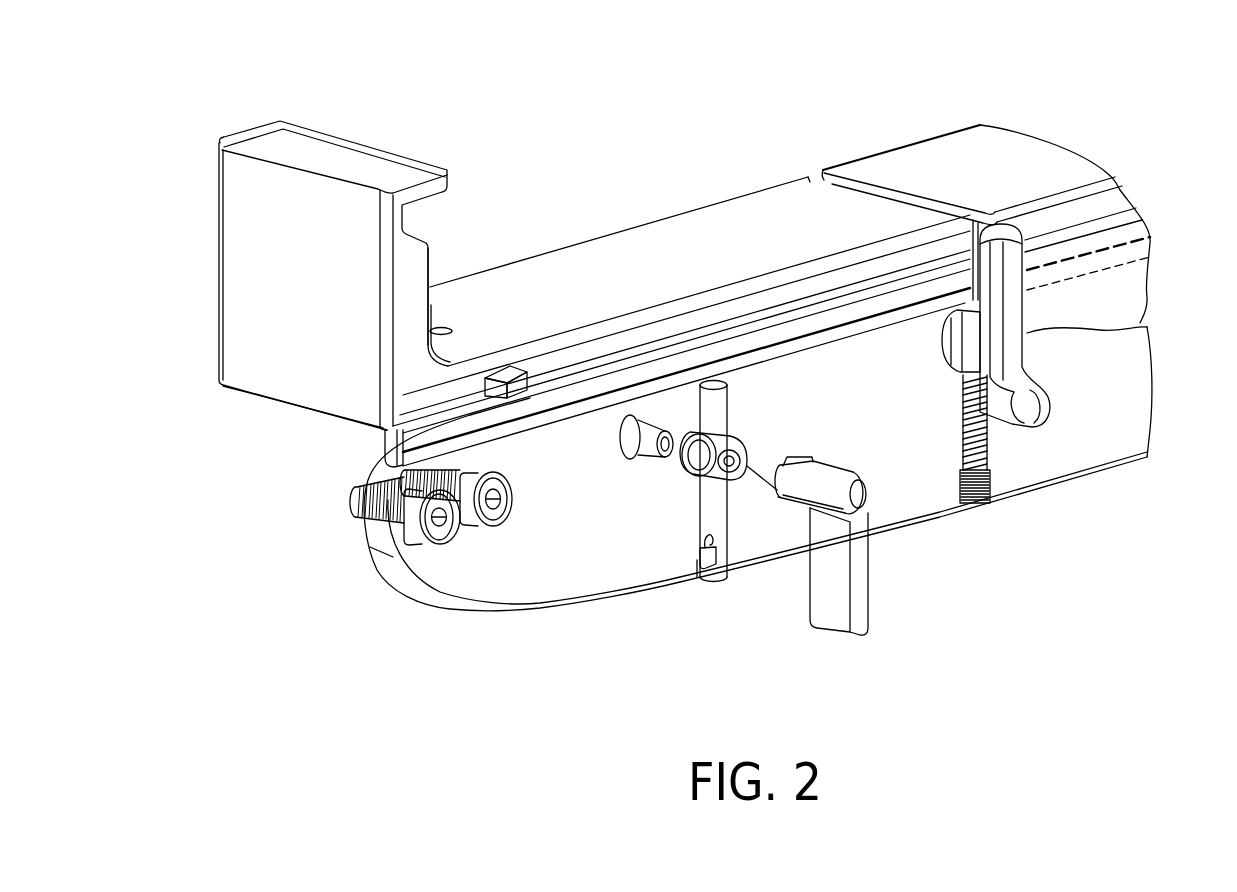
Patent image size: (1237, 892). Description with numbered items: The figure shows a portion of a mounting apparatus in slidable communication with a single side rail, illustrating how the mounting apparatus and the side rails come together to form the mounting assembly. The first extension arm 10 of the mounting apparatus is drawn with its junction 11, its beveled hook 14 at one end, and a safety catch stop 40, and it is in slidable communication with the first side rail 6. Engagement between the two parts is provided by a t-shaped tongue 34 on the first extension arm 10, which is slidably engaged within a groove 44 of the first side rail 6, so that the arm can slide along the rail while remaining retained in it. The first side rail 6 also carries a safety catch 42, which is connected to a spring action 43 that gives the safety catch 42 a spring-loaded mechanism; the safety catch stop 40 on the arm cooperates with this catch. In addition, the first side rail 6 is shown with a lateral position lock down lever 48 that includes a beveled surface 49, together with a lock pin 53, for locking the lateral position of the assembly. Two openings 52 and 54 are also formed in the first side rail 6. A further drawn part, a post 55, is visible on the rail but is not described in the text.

The first side rail 6 is at (550, 613).
The first extension arm 10 is at (517, 258).
The junction 11 is at (812, 172).
The beveled hook 14 is at (258, 126).
The t-shaped tongue 34 is at (385, 437).
The safety catch stop 40 is at (530, 374).
The safety catch 42 is at (1137, 330).
The spring action 43 is at (987, 452).
The groove 44 is at (527, 425).
The lateral position lock down lever 48 is at (867, 627).
The beveled surface 49 is at (797, 453).
The opening 52 is at (438, 544).
The lock pin 53 is at (647, 458).
The opening 54 is at (488, 527).
The post 55 is at (728, 404).